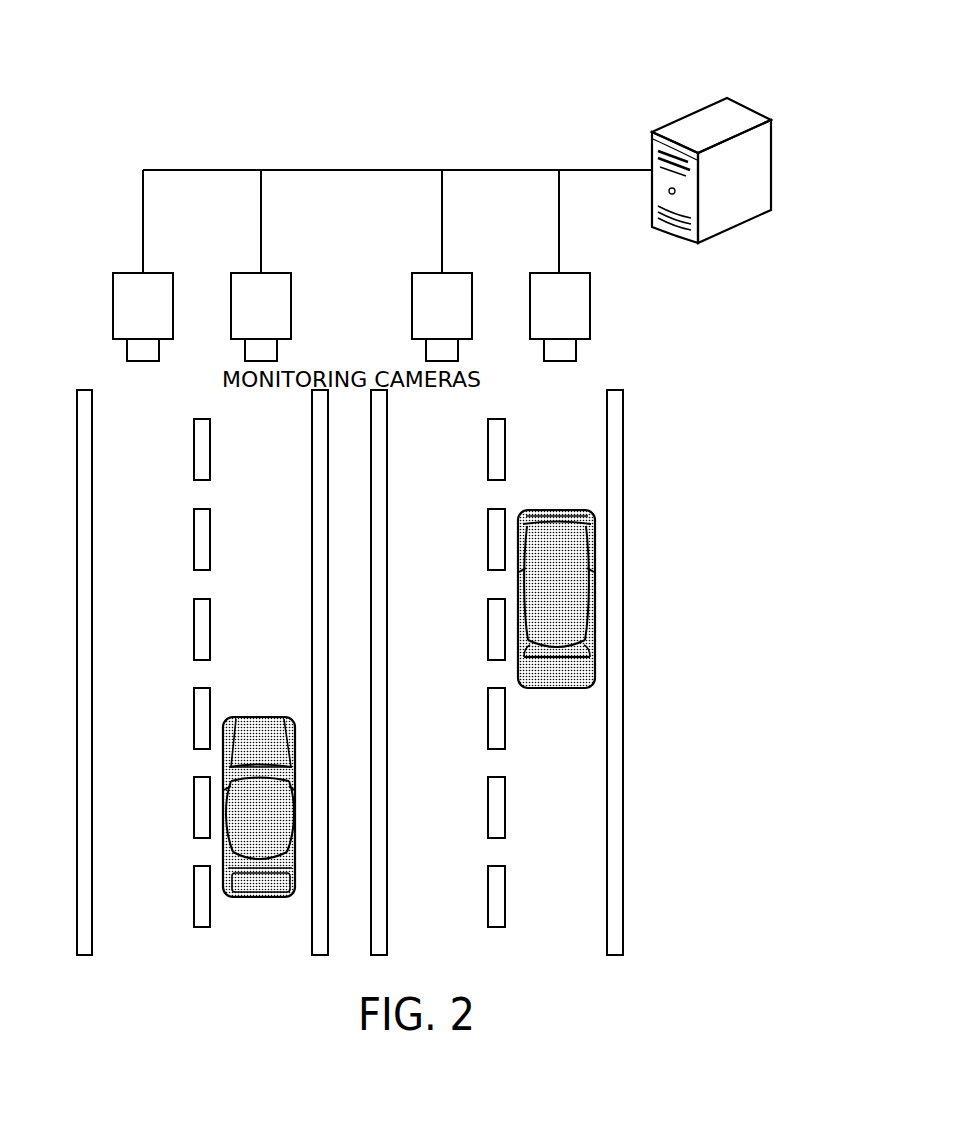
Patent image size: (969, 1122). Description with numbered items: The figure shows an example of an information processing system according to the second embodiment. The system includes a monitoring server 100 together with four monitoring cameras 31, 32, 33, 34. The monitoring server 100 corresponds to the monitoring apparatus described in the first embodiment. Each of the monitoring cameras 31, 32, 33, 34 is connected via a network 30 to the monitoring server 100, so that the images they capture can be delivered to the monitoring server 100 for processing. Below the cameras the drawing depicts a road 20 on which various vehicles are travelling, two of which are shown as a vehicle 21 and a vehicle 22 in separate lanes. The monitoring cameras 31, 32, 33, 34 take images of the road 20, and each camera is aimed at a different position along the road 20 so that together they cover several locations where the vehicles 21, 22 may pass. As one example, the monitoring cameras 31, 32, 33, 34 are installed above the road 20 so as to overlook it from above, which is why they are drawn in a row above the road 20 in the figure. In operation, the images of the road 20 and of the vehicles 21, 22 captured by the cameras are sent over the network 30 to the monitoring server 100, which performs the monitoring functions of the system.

The monitoring server 100 is at (772, 150).
The network 30 is at (415, 170).
The monitoring camera 31 is at (173, 300).
The monitoring camera 32 is at (291, 300).
The monitoring camera 33 is at (472, 300).
The monitoring camera 34 is at (590, 300).
The road 20 is at (662, 478).
The vehicle 21 is at (250, 717).
The vehicle 22 is at (548, 510).